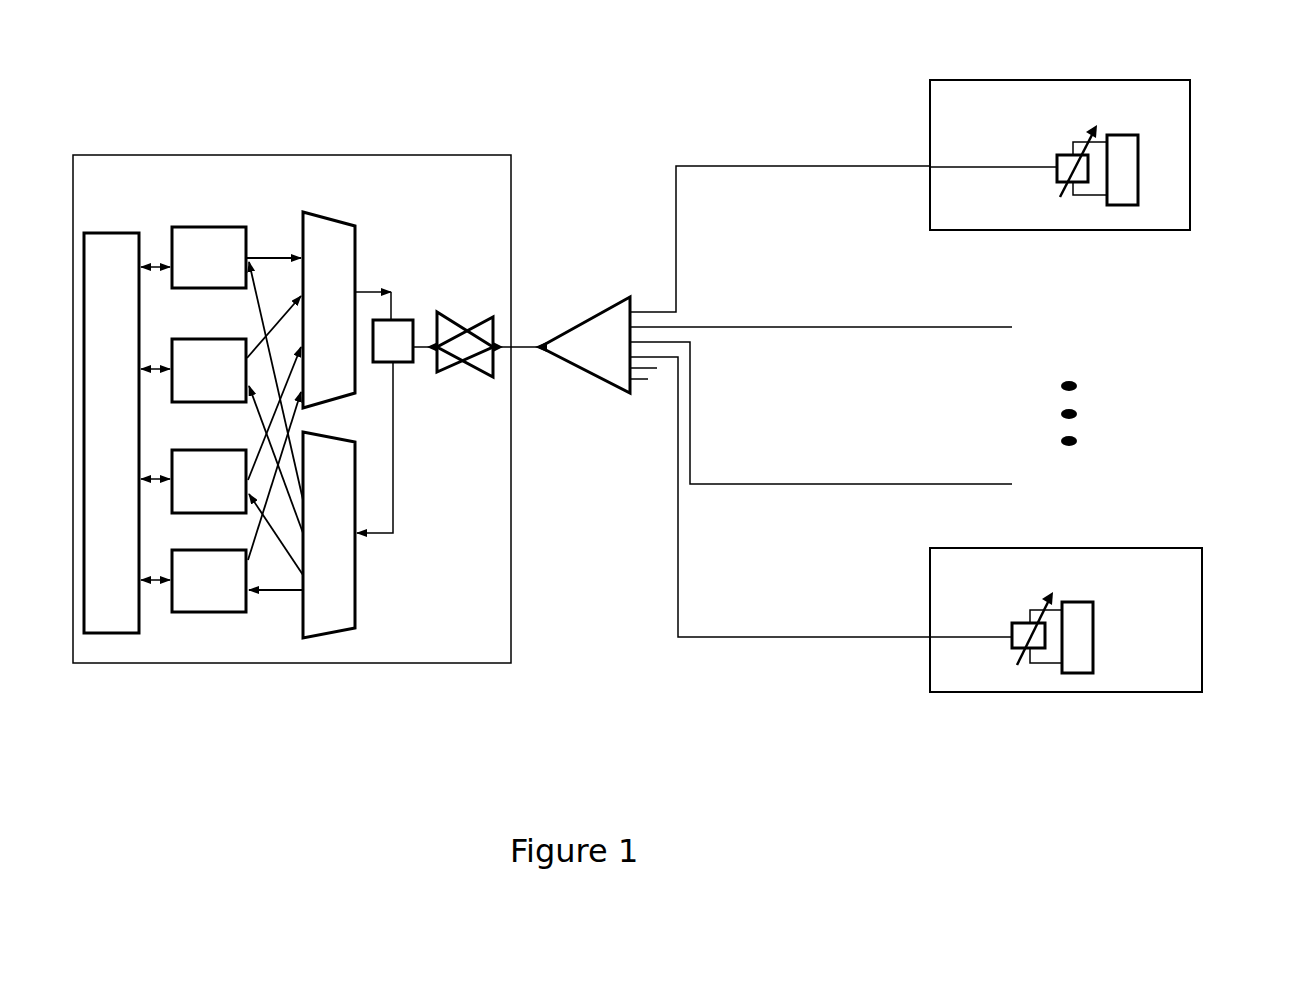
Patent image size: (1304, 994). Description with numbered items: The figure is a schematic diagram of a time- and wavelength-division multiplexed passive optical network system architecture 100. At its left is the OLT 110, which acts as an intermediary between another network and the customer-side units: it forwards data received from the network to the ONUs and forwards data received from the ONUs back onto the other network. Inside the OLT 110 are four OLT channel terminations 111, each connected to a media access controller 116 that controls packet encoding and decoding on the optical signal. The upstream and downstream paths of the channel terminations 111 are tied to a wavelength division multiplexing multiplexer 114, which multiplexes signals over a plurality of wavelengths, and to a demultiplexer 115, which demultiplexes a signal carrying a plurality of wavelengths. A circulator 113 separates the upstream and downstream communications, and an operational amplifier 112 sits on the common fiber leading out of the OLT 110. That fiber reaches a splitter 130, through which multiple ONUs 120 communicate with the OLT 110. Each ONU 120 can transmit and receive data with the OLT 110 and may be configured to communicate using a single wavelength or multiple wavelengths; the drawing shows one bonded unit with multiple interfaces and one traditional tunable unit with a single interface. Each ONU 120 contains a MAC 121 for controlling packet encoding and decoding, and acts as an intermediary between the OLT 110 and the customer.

The TWDM-PON system architecture 100 is at (140, 96).
The OLT 110 is at (383, 155).
The OLT channel termination 111 is at (235, 612).
The operational amplifier 112 is at (493, 363).
The circulator 113 is at (400, 363).
The wavelength division multiplexing multiplexer 114 is at (317, 215).
The demultiplexer 115 is at (345, 630).
The media access controller 116 is at (105, 633).
The ONU 120 is at (1093, 80).
The MAC 121 is at (1138, 183).
The splitter 130 is at (605, 305).